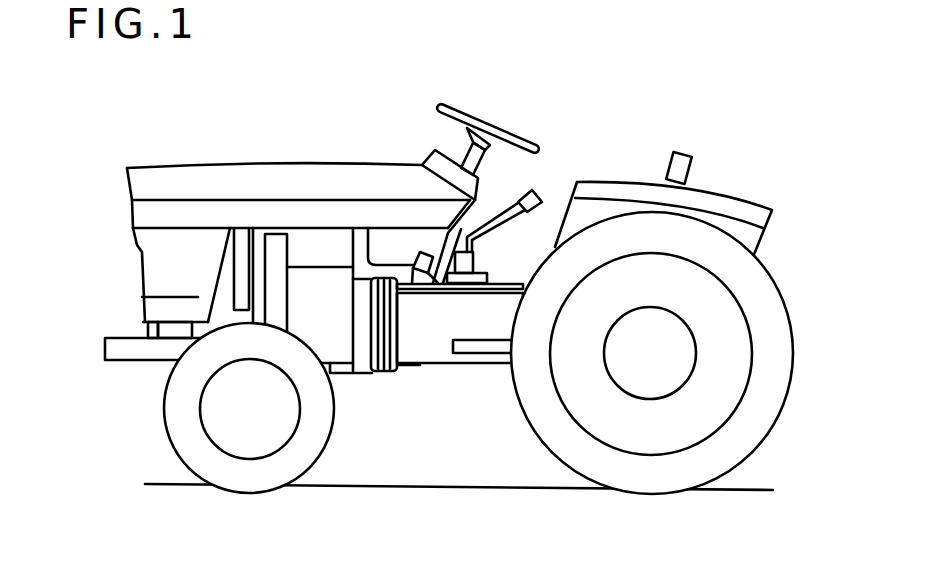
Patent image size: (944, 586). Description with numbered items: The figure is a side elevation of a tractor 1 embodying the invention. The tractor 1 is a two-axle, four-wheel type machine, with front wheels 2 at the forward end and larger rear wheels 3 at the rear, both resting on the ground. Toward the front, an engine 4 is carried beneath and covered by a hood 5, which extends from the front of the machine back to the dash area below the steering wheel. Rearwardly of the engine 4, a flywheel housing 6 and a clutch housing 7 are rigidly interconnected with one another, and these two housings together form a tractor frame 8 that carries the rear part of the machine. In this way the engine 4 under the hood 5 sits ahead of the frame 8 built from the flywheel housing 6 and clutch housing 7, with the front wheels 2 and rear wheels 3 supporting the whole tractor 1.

The tractor 1 is at (466, 272).
The front wheels 2 is at (313, 427).
The rear wheels 3 is at (757, 418).
The engine 4 is at (334, 345).
The hood 5 is at (354, 165).
The flywheel housing 6 is at (392, 372).
The clutch housing 7 is at (438, 355).
The tractor frame 8 is at (475, 366).